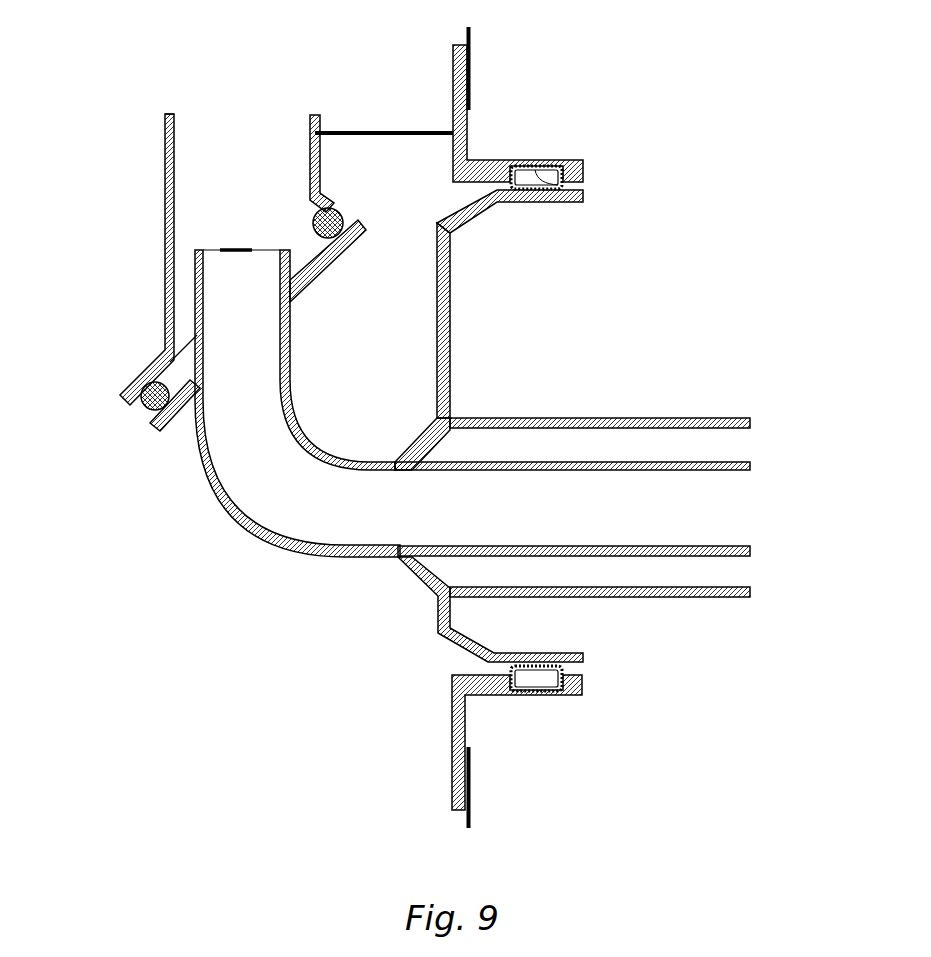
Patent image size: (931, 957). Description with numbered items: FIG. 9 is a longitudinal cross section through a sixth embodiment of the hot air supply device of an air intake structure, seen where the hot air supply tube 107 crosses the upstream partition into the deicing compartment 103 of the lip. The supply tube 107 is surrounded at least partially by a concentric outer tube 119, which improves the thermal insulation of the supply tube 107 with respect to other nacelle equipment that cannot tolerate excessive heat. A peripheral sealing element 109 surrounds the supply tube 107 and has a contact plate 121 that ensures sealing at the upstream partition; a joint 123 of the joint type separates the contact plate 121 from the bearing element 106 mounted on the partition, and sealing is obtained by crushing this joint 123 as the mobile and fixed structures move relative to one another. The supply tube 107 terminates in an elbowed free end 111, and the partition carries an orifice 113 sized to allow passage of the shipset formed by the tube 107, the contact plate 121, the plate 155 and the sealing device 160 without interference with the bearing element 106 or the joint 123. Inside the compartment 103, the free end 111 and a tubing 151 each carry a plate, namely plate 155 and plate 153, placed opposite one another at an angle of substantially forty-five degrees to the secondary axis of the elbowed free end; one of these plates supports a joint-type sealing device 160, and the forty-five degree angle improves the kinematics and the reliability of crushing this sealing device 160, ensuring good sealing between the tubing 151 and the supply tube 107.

The deicing compartment 103 is at (128, 201).
The bearing element 106 is at (467, 120).
The hot air supply tube 107 is at (725, 462).
The peripheral sealing element 109 is at (471, 33).
The elbowed free end 111 is at (196, 290).
The orifice 113 is at (466, 194).
The concentric outer tube 119 is at (647, 418).
The contact plate 121 is at (451, 295).
The joint 123 is at (565, 182).
The tubing 151 is at (165, 134).
The plate 153 is at (138, 385).
The plate 155 is at (160, 432).
The sealing device 160 is at (335, 210).